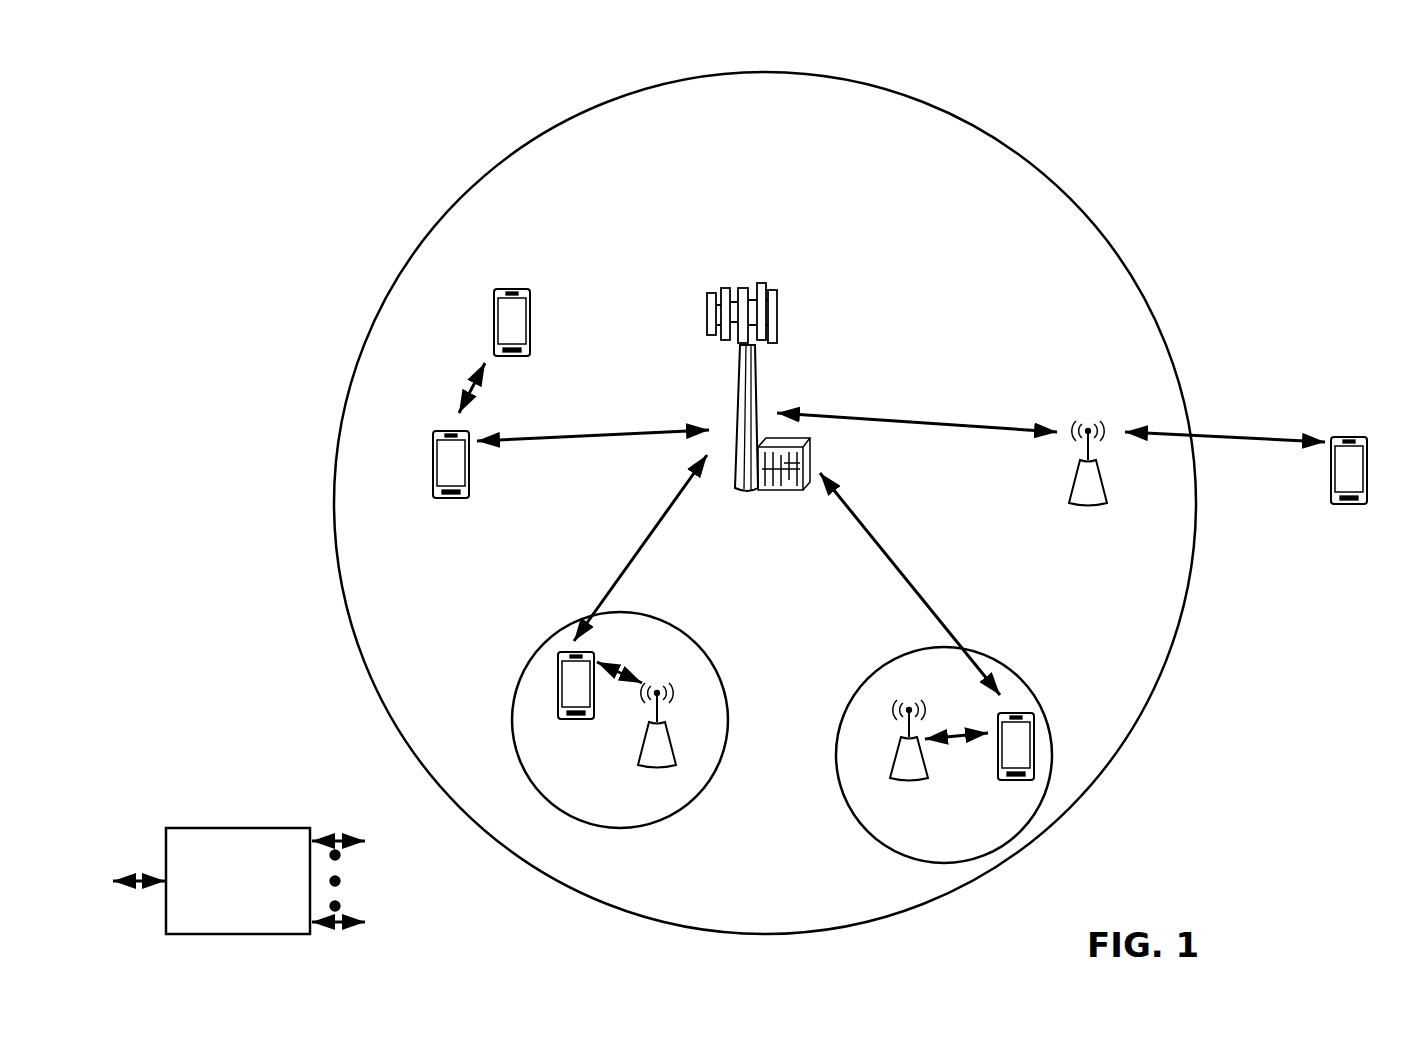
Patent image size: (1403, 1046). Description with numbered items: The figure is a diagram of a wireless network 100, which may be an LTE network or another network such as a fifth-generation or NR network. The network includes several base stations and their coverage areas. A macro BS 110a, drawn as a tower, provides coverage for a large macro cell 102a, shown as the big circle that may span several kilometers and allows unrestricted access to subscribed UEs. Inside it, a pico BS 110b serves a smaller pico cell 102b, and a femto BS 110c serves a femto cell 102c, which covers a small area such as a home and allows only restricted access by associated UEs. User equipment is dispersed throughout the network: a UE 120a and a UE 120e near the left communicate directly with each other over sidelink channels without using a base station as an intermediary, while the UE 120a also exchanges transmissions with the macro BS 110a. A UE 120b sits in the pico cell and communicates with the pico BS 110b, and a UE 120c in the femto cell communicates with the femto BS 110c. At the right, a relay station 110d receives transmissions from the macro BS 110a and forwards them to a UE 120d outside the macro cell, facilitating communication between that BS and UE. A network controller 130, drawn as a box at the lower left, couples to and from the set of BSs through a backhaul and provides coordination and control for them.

The wireless network 100 is at (222, 66).
The macro cell 102a is at (1050, 182).
The pico cell 102b is at (714, 660).
The femto cell 102c is at (878, 665).
The macro BS 110a is at (752, 280).
The pico BS 110b is at (676, 760).
The femto BS 110c is at (890, 770).
The relay station 110d is at (1090, 424).
The UE 120a is at (432, 462).
The UE 120b is at (560, 720).
The UE 120c is at (1000, 782).
The UE 120d is at (1360, 436).
The UE 120e is at (492, 310).
The network controller 130 is at (237, 827).